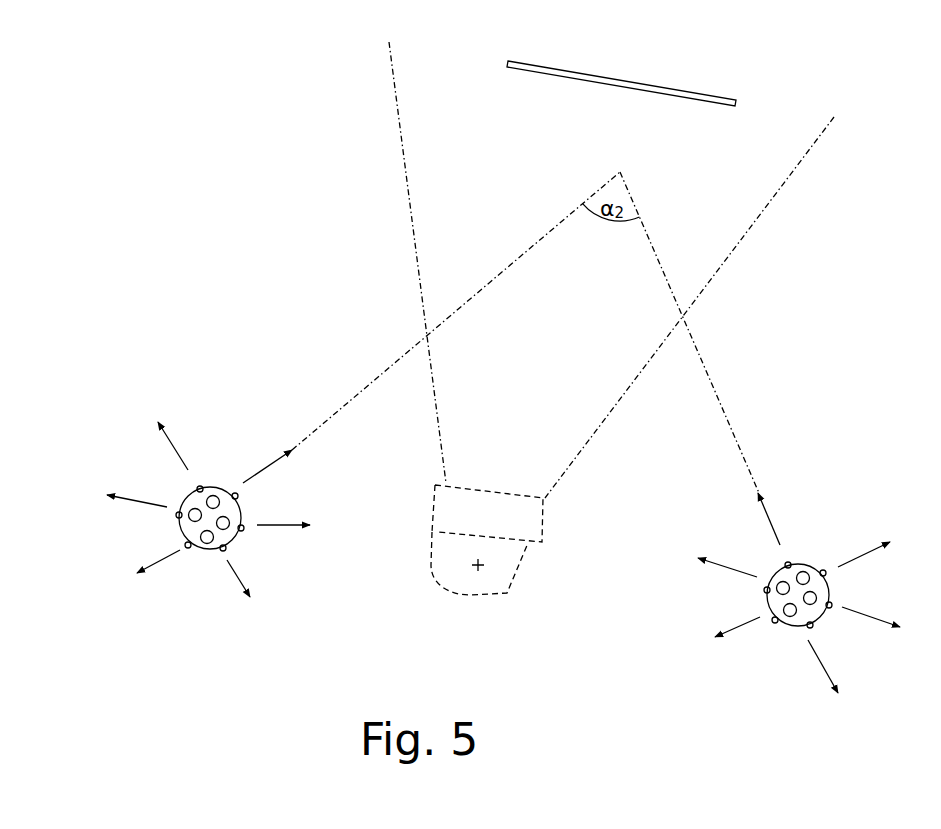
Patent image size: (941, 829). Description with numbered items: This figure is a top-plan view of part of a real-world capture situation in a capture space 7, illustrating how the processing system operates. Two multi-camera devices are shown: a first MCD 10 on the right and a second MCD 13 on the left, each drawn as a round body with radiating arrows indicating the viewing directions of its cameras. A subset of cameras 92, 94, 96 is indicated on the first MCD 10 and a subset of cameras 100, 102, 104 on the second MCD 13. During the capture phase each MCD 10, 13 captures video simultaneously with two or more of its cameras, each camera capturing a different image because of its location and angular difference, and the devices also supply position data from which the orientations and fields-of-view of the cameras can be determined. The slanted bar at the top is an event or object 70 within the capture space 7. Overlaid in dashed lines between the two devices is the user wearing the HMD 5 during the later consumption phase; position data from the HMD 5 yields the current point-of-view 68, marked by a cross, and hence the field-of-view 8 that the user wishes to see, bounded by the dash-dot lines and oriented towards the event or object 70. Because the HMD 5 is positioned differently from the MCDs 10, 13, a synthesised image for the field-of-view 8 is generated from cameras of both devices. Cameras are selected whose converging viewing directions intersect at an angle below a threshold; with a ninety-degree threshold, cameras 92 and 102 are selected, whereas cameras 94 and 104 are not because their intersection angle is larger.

The HMD 5 is at (547, 512).
The capture space 7 is at (309, 180).
The field-of-view 8 is at (517, 157).
The first MCD 10 is at (788, 627).
The second MCD 13 is at (197, 550).
The point-of-view 68 is at (482, 566).
The event or object 70 is at (689, 92).
The camera 92 is at (788, 565).
The camera 94 is at (765, 588).
The camera 96 is at (830, 577).
The camera 100 is at (190, 492).
The camera 102 is at (233, 498).
The camera 104 is at (245, 530).